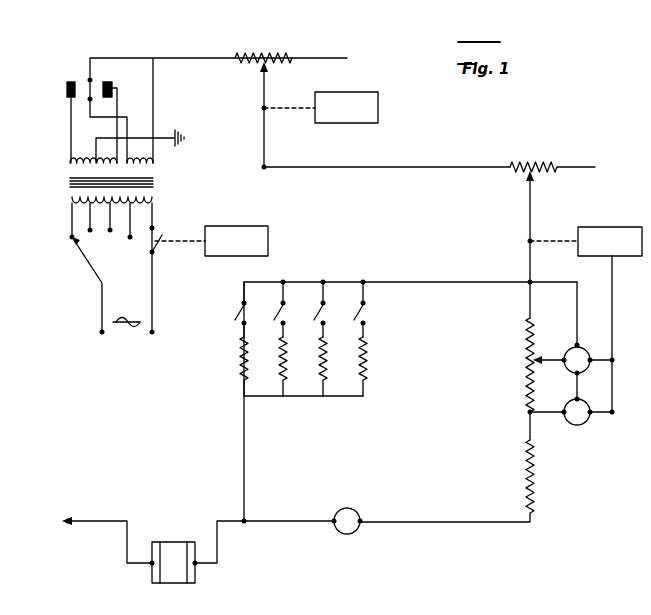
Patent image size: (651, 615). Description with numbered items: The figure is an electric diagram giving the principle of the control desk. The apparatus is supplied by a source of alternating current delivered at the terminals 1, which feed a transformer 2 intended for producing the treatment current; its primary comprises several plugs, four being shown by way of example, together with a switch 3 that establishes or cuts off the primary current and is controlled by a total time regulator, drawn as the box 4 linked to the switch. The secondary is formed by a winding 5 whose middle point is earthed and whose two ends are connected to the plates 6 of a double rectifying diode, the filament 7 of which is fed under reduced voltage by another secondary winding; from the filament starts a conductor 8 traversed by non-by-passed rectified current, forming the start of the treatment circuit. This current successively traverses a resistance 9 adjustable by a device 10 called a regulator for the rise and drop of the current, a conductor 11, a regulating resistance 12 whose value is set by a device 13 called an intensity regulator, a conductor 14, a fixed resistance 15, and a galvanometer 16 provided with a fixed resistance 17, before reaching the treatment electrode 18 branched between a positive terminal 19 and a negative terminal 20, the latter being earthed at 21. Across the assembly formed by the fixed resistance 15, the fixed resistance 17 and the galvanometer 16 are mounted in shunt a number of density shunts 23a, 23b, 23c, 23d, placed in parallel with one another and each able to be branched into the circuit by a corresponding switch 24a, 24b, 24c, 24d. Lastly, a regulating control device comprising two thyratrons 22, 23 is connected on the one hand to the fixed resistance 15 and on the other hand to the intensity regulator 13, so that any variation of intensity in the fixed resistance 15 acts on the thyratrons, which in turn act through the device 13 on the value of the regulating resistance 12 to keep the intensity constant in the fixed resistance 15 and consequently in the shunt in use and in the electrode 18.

The terminals 1 is at (126, 335).
The transformer 2 is at (66, 182).
The switch 3 is at (164, 238).
The control unit 4 is at (211, 241).
The winding 5 is at (70, 163).
The plates 6 is at (66, 89).
The filament 7 is at (87, 90).
The conductor 8 is at (203, 38).
The resistance 9 is at (267, 40).
The regulator for the rise and drop of the current 10 is at (320, 107).
The conductor 11 is at (411, 148).
The regulating resistance 12 is at (548, 142).
The intensity regulator 13 is at (586, 319).
The conductor 14 is at (530, 222).
The fixed resistance 15 is at (526, 350).
The galvanometer 16 is at (302, 521).
The fixed resistance 17 is at (528, 484).
The treatment electrode 18 is at (170, 578).
The positive terminal 19 is at (197, 566).
The negative terminal 20 is at (152, 566).
The earth 21 is at (70, 521).
The thyratron 22 is at (571, 411).
The thyratron 23 is at (574, 340).
The density shunt 23a is at (239, 362).
The density shunt 23b is at (279, 362).
The density shunt 23c is at (319, 362).
The density shunt 23d is at (359, 362).
The switch 24a is at (234, 318).
The switch 24b is at (276, 318).
The switch 24c is at (316, 318).
The switch 24d is at (356, 318).